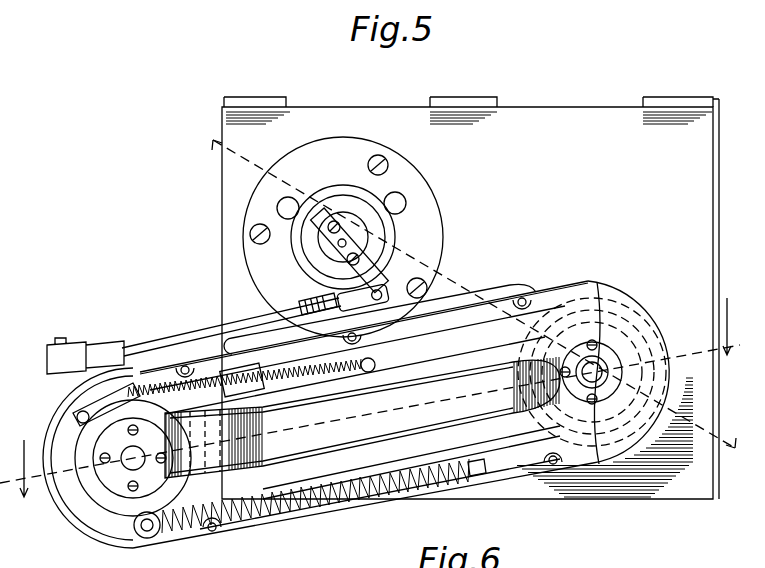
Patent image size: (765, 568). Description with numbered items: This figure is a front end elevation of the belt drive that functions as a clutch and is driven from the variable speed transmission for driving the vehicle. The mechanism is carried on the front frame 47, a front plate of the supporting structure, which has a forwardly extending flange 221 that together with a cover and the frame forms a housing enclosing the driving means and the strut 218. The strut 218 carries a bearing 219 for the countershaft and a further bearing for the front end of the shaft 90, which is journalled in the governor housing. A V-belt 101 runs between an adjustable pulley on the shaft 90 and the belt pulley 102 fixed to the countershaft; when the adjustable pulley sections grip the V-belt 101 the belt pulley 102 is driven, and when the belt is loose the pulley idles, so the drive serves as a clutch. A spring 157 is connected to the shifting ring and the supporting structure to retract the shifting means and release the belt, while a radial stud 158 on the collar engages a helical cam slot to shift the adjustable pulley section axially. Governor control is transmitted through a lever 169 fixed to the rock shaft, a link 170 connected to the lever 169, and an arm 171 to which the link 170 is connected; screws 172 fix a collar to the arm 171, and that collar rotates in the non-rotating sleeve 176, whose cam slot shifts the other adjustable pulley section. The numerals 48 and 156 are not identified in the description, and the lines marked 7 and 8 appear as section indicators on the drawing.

The front frame 47 is at (467, 303).
The plate flange 48 is at (222, 266).
The shaft 90 is at (128, 468).
The V-belt 101 is at (456, 330).
The belt pulley 102 is at (596, 315).
The tension spring 156 is at (326, 382).
The spring 157 is at (393, 494).
The radial stud 158 is at (147, 538).
The lever 169 is at (70, 350).
The link 170 is at (171, 345).
The arm 171 is at (390, 294).
The screws 172 is at (358, 250).
The sleeve 176 is at (341, 204).
The strut 218 is at (362, 417).
The bearing 219 is at (578, 397).
The flange 221 is at (526, 296).
The section line 7- 7 is at (374, 397).
The section line 8- 8 is at (472, 294).